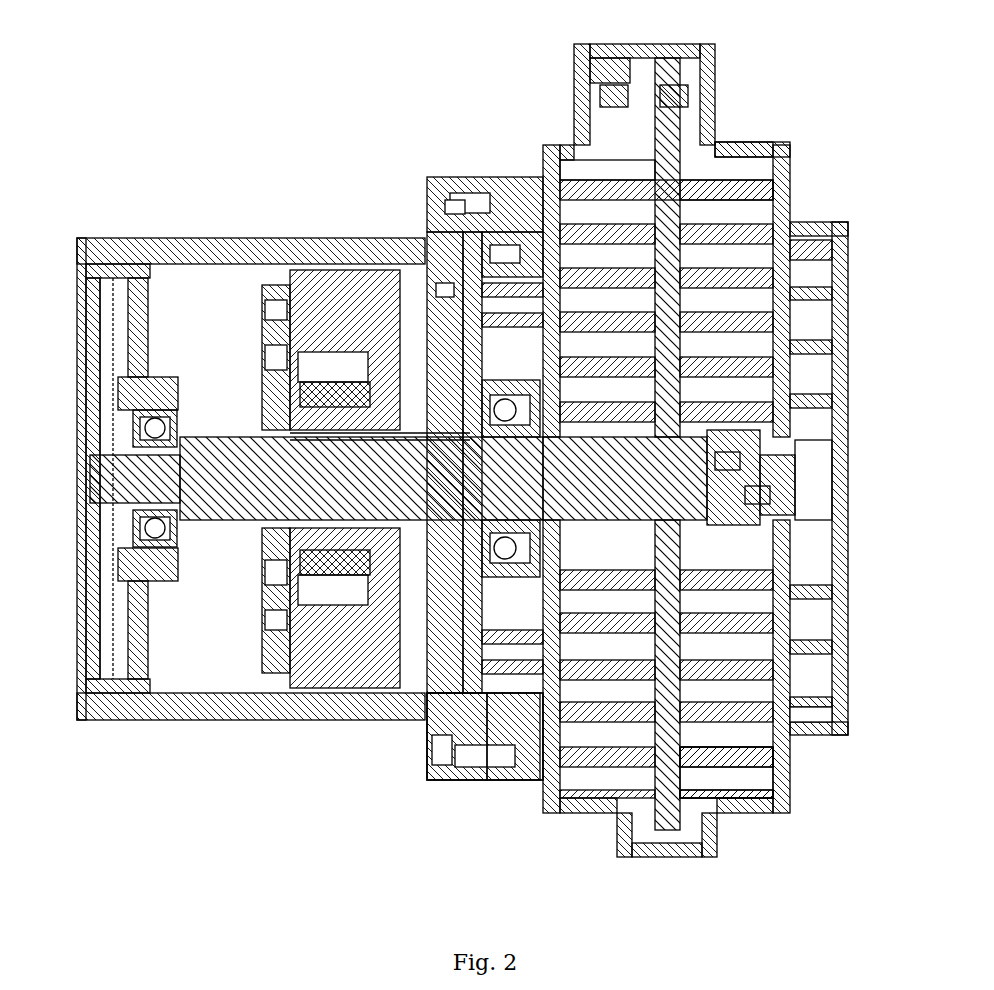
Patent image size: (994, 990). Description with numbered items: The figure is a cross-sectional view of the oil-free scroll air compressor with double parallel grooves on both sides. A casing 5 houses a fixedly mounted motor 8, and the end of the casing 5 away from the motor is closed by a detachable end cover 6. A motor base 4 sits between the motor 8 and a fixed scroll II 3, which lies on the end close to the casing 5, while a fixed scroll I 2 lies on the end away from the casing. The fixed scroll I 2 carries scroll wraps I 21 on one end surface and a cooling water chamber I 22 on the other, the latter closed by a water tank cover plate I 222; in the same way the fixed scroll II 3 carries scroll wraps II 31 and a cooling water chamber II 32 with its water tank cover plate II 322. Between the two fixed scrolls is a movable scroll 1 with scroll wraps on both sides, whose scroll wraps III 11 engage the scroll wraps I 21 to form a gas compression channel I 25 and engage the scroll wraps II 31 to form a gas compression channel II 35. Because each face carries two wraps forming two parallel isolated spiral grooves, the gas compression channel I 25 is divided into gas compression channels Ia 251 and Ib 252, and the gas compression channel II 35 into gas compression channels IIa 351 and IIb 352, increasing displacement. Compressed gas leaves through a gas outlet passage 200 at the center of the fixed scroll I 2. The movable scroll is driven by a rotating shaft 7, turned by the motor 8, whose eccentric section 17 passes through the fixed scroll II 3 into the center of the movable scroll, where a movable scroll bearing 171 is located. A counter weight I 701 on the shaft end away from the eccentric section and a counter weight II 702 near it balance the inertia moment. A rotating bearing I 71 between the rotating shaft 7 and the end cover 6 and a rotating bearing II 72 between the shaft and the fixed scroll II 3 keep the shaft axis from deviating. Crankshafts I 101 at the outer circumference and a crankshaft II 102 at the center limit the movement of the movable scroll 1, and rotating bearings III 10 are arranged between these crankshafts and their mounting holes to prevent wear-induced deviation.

The movable scroll with scroll wraps on both sides 1 is at (715, 107).
The fixed scroll I 2 is at (750, 142).
The fixed scroll II 3 is at (557, 145).
The motor base 4 is at (458, 250).
The casing 5 is at (200, 250).
The end cover 6 is at (140, 297).
The rotating shaft 7 is at (182, 483).
The motor 8 is at (320, 645).
The rotating bearing III 10 is at (617, 97).
The scroll wraps III 11 is at (602, 190).
The eccentric section 17 is at (700, 565).
The scroll wraps I 21 is at (775, 192).
The cooling water chamber I 22 is at (810, 247).
The gas compression channel I 25 is at (785, 862).
The scroll wraps II 31 is at (620, 183).
The cooling water chamber II 32 is at (520, 235).
The gas compression channel II 35 is at (497, 858).
The rotating bearing I 71 is at (145, 525).
The rotating bearing II 72 is at (492, 568).
The crankshaft I 101 is at (680, 85).
The crankshaft II 102 is at (810, 567).
The movable scroll bearing 171 is at (840, 700).
The gas outlet passage 200 is at (830, 478).
The water tank cover plate I 222 is at (847, 260).
The gas compression channel Ia 251 is at (745, 690).
The gas compression channel Ib 252 is at (765, 700).
The water tank cover plate II 322 is at (430, 205).
The gas compression channel IIa 351 is at (545, 795).
The gas compression channel IIb 352 is at (505, 780).
The counter weight I 701 is at (95, 612).
The counter weight II 702 is at (432, 290).